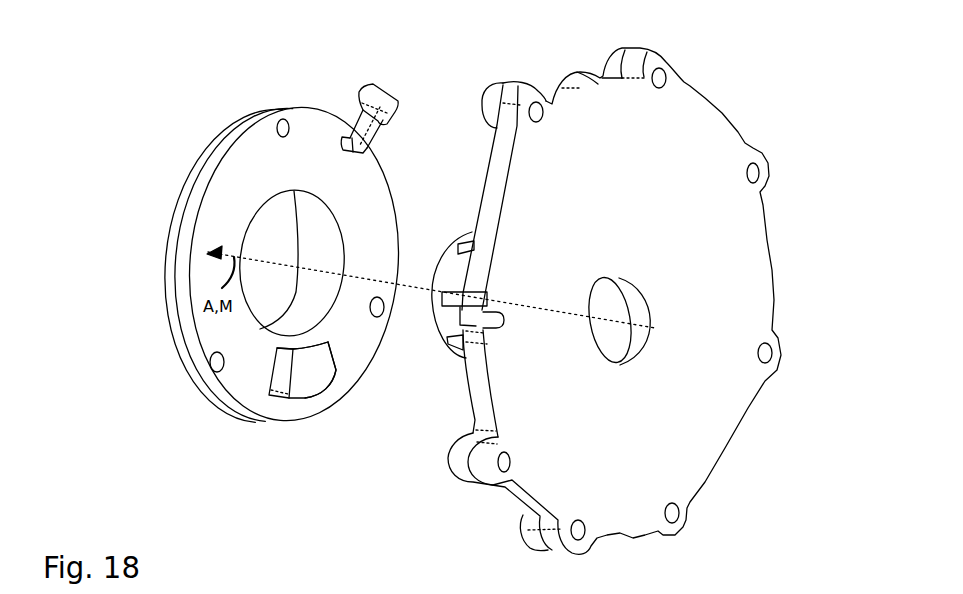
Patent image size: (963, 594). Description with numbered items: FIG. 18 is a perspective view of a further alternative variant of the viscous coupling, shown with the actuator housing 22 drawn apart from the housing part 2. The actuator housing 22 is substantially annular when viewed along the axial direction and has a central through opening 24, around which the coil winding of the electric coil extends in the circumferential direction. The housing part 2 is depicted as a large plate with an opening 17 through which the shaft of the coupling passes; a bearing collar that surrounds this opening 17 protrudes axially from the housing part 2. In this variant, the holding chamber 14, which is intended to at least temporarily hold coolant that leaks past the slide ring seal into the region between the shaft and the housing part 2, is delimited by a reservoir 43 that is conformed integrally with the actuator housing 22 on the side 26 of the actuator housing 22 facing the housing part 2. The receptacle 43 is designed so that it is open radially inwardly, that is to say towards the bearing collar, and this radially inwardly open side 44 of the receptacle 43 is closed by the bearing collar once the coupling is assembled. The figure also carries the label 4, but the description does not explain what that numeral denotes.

The housing part 2 is at (798, 131).
The housing cover 4 is at (823, 410).
The holding chamber 14 is at (322, 386).
The opening 17 is at (620, 330).
The actuator housing 22 is at (338, 86).
The through opening 24 is at (292, 263).
The side of the actuator housing 26 is at (257, 146).
The reservoir 43 is at (328, 367).
The radially inwardly open side 44 is at (302, 340).